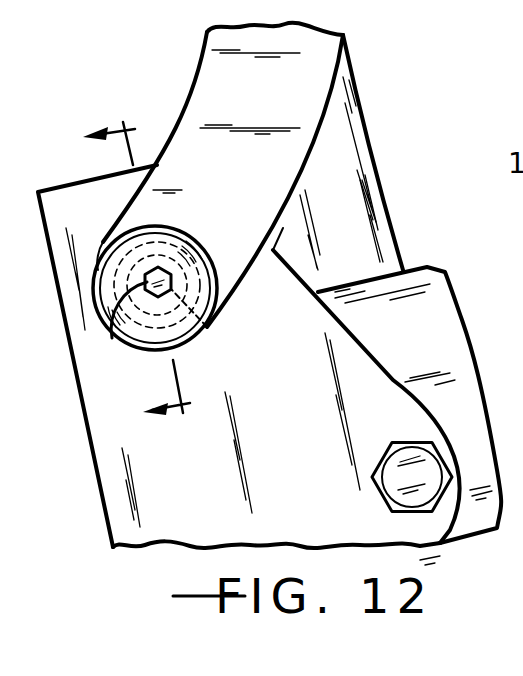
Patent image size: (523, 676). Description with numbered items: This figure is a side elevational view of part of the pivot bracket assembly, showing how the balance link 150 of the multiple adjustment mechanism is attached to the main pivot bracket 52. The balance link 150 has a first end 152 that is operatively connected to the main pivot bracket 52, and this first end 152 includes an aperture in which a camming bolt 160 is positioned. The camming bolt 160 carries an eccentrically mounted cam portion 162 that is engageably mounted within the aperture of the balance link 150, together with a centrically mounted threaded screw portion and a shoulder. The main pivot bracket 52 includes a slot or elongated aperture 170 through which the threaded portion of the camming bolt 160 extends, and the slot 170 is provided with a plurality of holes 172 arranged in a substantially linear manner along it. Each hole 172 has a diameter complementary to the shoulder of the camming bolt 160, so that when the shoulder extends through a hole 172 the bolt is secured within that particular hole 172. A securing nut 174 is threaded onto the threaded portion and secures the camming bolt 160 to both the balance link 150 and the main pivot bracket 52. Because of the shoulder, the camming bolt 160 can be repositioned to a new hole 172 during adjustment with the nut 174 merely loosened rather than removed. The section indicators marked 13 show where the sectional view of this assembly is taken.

The main pivot bracket 52 is at (90, 444).
The balance link 150 is at (195, 80).
The first end 152 is at (102, 248).
The camming bolt 160 is at (195, 240).
The eccentrically mounted cam portion 162 is at (200, 282).
The slot 170 is at (172, 225).
The holes 172 is at (210, 330).
The securing nut 174 is at (112, 336).
The section line 13- 13 is at (121, 282).